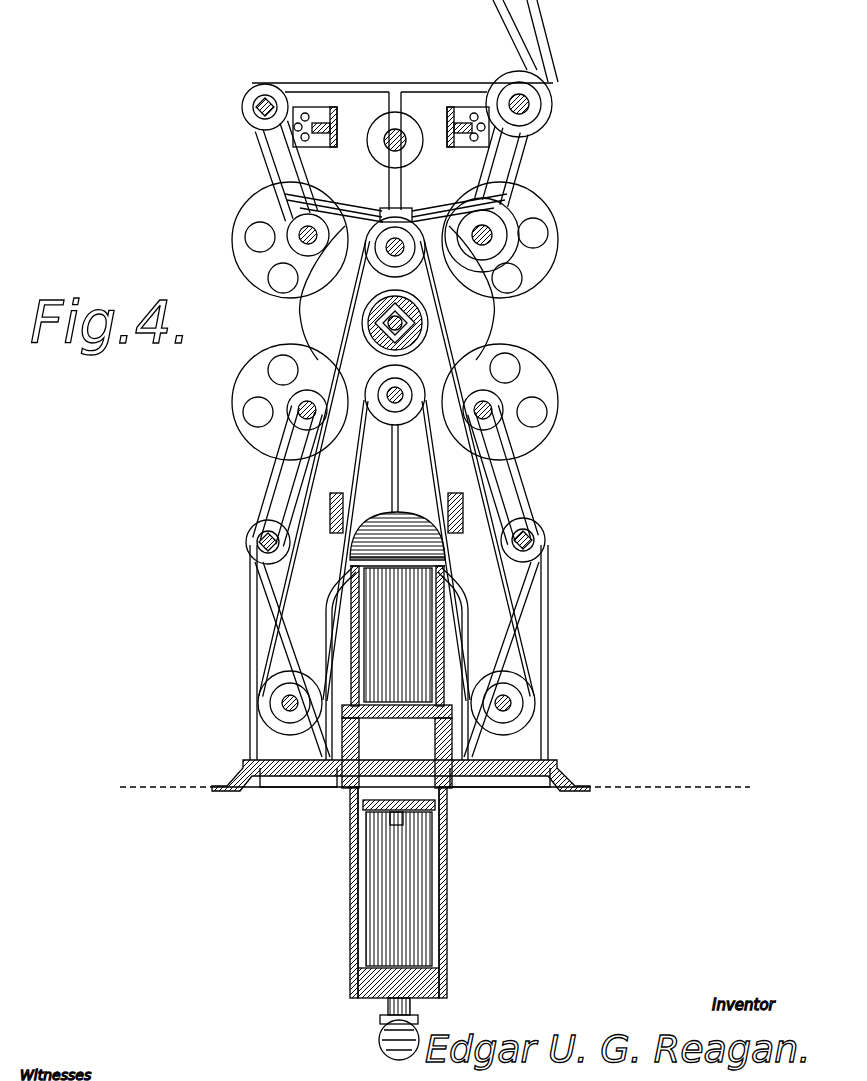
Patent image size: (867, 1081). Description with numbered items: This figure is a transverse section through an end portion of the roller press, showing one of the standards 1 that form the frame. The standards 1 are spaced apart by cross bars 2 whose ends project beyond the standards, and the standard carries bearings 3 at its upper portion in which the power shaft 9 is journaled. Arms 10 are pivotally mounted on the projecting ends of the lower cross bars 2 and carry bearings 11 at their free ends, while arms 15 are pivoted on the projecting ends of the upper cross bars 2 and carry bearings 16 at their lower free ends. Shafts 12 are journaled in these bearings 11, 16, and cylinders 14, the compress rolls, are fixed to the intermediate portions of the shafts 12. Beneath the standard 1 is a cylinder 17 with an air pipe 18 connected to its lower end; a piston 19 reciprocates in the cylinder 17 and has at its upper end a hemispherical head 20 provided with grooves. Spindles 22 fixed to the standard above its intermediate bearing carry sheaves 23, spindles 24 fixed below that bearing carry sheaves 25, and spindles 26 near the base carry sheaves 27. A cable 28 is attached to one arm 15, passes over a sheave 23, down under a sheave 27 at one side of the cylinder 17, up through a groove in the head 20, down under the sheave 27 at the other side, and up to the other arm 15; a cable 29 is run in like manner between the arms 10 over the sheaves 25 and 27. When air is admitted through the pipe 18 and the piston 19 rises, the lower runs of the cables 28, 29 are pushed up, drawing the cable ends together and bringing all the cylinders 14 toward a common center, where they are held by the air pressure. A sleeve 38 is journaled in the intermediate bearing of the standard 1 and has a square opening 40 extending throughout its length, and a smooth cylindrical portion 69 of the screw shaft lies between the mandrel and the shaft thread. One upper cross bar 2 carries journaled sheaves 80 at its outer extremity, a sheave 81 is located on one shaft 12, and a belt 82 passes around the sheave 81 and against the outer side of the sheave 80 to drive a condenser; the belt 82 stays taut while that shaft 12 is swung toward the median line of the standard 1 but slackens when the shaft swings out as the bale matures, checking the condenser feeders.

The standards 1 is at (556, 652).
The cross bars 2 is at (533, 540).
The bearings 3 is at (372, 156).
The power shaft 9 is at (402, 128).
The arms 10 is at (507, 487).
The bearings 11 is at (500, 430).
The shafts 12 is at (492, 238).
The cylinders 14 is at (238, 263).
The arms 15 is at (278, 147).
The bearings 16 is at (300, 234).
The cylinders 17 is at (448, 870).
The air pipes 18 is at (410, 1010).
The pistons 19 is at (340, 788).
The hemispherical heads 20 is at (455, 578).
The spindles 22 is at (405, 232).
The sheaves 23 is at (358, 282).
The spindles 24 is at (392, 412).
The sheaves 25 is at (420, 382).
The spindles 26 is at (287, 702).
The sheaves 27 is at (273, 728).
The cable 28 is at (290, 358).
The cable 29 is at (305, 578).
The sleeve 38 is at (423, 313).
The opening 40 is at (433, 327).
The cylindrical portion 69 is at (385, 325).
The sheaves 80 is at (550, 85).
The sheave 81 is at (498, 230).
The belt 82 is at (540, 23).